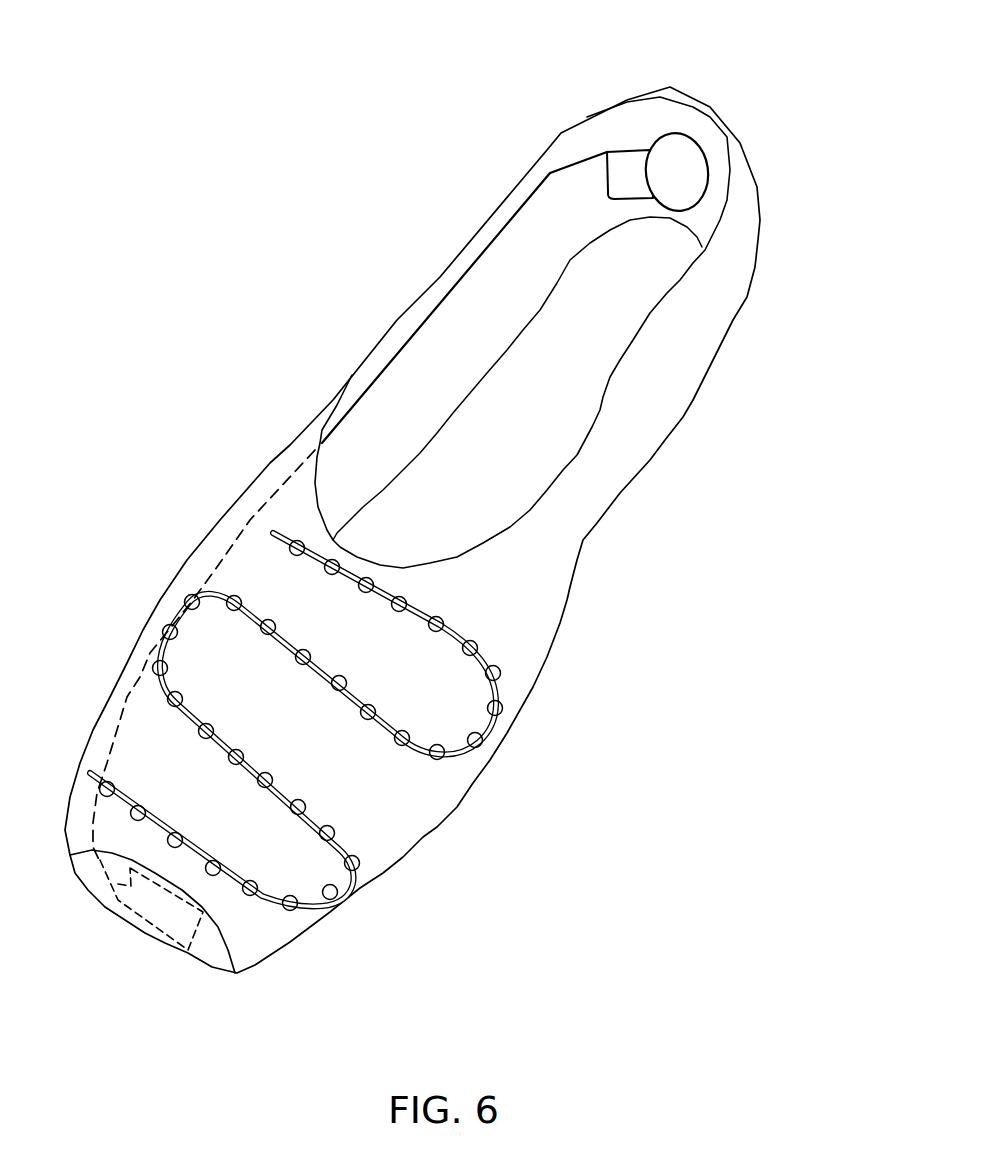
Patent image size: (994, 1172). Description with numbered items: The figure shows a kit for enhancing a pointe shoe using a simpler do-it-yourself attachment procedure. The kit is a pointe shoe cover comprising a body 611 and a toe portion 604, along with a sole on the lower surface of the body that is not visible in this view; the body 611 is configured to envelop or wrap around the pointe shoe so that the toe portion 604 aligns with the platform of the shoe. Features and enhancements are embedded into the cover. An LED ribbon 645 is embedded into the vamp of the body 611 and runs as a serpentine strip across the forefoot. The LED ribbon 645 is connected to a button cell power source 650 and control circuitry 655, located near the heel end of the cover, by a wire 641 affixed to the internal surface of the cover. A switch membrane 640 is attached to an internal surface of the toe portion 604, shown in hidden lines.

The toe portion 604 is at (217, 957).
The body 611 is at (620, 435).
The switch membrane 640 is at (155, 907).
The wire 641 is at (538, 185).
The LED ribbon 645 is at (498, 698).
The button cell power source 650 is at (677, 163).
The control circuitry 655 is at (632, 165).